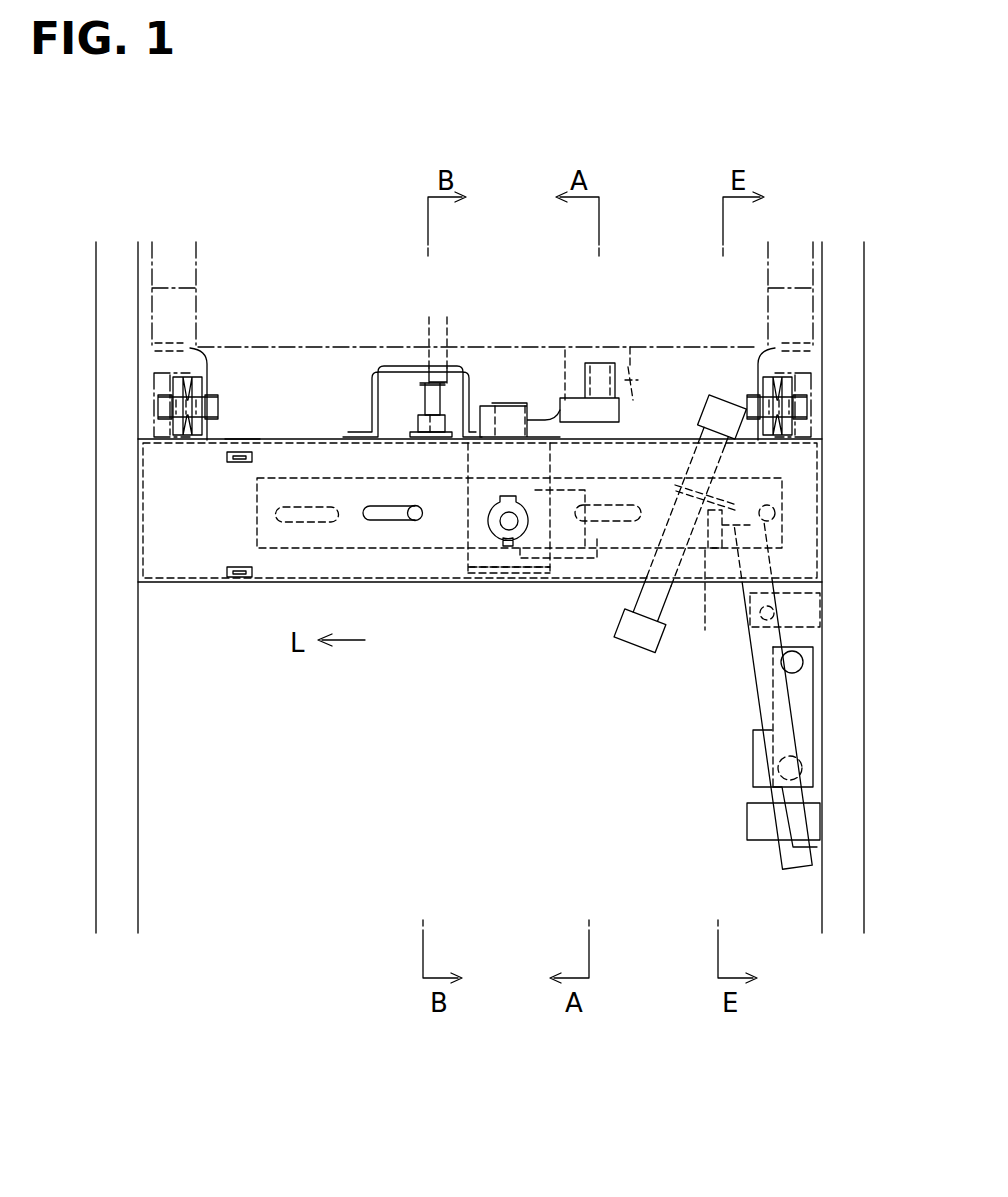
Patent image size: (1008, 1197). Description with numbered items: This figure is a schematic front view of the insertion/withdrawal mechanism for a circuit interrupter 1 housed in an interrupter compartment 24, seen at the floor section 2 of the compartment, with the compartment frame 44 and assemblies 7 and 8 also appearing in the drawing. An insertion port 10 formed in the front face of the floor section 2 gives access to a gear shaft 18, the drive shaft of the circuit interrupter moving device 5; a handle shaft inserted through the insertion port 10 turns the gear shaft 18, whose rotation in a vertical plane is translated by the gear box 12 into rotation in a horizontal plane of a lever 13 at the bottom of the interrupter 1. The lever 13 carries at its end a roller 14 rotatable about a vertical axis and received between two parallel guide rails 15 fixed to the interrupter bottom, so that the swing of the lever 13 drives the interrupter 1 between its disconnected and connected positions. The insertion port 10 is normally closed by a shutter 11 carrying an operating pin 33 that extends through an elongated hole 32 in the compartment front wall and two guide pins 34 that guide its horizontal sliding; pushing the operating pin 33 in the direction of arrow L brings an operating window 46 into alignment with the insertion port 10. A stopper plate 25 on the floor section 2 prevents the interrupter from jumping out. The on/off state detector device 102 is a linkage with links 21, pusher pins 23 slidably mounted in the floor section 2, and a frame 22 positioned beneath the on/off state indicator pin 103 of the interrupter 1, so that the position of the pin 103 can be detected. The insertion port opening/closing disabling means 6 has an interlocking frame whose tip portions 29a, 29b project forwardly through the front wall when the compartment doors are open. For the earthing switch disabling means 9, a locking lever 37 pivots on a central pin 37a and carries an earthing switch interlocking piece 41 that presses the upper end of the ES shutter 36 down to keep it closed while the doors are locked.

The circuit interrupter 1 is at (768, 313).
The floor section 2 is at (243, 440).
The circuit interrupter moving device 5 is at (487, 592).
The insertion port opening/closing means disabling means 6 is at (228, 572).
The swing arm 7 is at (630, 637).
The lever 8 is at (760, 678).
The earthing switch disabling means 9 is at (690, 623).
The insertion port 10 is at (512, 546).
The shutter 11 is at (298, 538).
The gear box 12 is at (467, 557).
The lever 13 is at (543, 403).
The roller 14 is at (603, 360).
The guide rails 15 is at (628, 347).
The gear shaft 18 is at (500, 517).
The links 21 is at (447, 378).
The frame 22 is at (418, 387).
The pusher pins 23 is at (463, 397).
The interrupter compartment 24 is at (807, 327).
The stopper plate 25 is at (378, 405).
The tip portion 29a is at (240, 465).
The tip portion 29b is at (230, 565).
The elongated hole 32 is at (382, 505).
The operating pin 33 is at (422, 522).
The guide pins 34 is at (330, 505).
The ES shutter 36 is at (760, 750).
The locking lever 37 is at (703, 430).
The pin 37a is at (660, 537).
The earthing switch interlocking piece 41 is at (720, 585).
The frame 44 is at (143, 663).
The operating window 46 is at (573, 533).
The on/off state detector device 102 is at (440, 405).
The on/off state indicator pin 103 is at (440, 315).